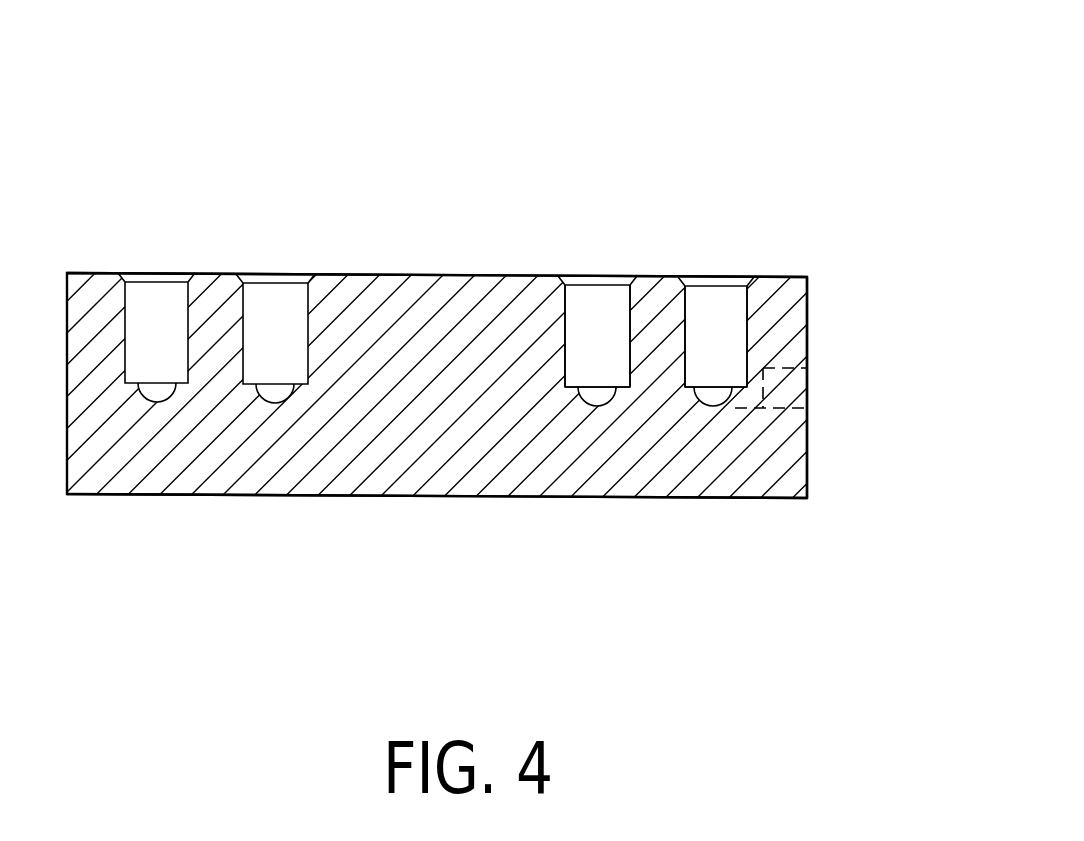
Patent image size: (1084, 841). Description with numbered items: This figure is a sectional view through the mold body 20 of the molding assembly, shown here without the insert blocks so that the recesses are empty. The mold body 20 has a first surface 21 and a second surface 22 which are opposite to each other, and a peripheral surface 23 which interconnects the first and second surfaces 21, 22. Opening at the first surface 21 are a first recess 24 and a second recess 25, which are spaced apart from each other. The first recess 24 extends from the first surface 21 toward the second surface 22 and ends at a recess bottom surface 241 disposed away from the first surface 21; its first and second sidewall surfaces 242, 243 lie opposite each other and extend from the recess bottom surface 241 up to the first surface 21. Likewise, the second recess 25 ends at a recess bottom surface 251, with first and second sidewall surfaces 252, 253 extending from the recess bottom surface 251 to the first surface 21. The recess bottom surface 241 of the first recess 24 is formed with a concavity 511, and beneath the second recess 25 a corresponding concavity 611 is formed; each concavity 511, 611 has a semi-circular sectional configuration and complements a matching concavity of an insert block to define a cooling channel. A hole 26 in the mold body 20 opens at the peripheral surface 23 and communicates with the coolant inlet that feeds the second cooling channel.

The mold body 20 is at (760, 502).
The first surface 21 is at (393, 275).
The second surface 22 is at (457, 497).
The peripheral surface 23 is at (808, 468).
The first recess 24 is at (603, 300).
The recess bottom surface 241 is at (573, 383).
The first sidewall surface 242 is at (577, 287).
The second sidewall surface 243 is at (629, 312).
The second recess 25 is at (727, 295).
The recess bottom surface 251 is at (688, 382).
The first sidewall surface 252 is at (689, 296).
The second sidewall surface 253 is at (743, 308).
The hole 26 is at (793, 357).
The concavity 511 is at (590, 404).
The concavity 611 is at (705, 404).